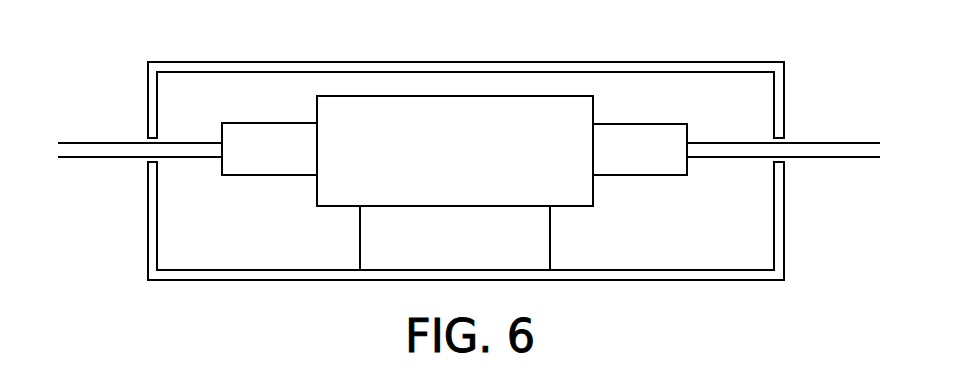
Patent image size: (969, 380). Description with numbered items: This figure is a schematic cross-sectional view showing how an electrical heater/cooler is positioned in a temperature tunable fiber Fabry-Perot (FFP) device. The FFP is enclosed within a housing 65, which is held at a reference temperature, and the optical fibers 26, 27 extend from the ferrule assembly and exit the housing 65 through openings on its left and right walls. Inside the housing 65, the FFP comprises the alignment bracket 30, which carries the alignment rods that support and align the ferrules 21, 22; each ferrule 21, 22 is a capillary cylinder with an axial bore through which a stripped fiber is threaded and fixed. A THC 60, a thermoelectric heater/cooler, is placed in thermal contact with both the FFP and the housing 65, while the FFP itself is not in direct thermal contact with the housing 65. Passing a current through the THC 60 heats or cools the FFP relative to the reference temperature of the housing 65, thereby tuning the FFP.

The ferrule 21 is at (240, 176).
The ferrule 22 is at (667, 177).
The fiber 26 is at (85, 127).
The fiber 27 is at (836, 127).
The alignment bracket 30 is at (378, 110).
The THC 60 is at (398, 258).
The housing 65 is at (800, 79).